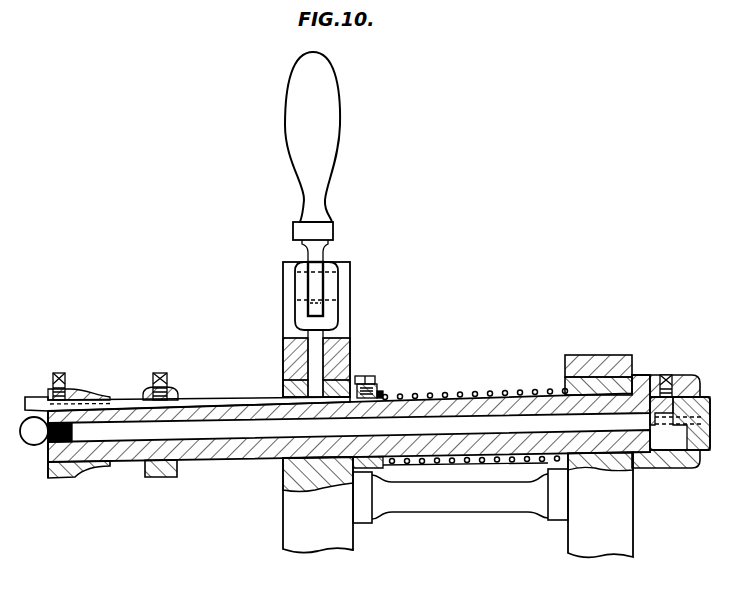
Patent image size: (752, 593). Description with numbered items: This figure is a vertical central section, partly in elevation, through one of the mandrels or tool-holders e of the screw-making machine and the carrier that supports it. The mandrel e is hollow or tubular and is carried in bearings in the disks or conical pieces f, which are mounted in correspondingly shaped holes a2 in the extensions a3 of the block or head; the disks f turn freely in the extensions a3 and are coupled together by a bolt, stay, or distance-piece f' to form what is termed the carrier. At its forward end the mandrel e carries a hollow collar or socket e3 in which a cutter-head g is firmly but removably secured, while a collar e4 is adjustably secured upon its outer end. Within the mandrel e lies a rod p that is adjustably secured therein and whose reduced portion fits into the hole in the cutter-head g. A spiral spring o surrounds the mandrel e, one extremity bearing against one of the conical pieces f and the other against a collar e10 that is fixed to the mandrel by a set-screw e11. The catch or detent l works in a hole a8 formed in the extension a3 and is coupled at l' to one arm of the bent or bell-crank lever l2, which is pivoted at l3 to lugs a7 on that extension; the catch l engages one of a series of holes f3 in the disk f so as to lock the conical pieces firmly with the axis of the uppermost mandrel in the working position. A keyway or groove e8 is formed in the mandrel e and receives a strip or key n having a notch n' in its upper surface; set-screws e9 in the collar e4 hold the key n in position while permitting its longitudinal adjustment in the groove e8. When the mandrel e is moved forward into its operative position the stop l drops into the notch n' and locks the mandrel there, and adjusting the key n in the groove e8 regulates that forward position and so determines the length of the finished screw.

The bent or bell-crank lever l2 is at (334, 240).
The lugs a7 is at (284, 270).
The coupling of catch to lever l' is at (298, 301).
The catch or detent l is at (315, 329).
The pivot l3 is at (292, 293).
The hole a8 is at (350, 341).
The extensions a3 is at (447, 359).
The series of holes f3 is at (283, 390).
The correspondingly-shaped holes a2 is at (350, 381).
The set-screw e11 is at (380, 382).
The mandrel or tool-holder e is at (349, 418).
The rod p is at (194, 431).
The spiral spring o is at (446, 393).
The strip or key n is at (351, 411).
The notch n' is at (143, 389).
The keyway or groove e8 is at (228, 409).
The set-screws e9 is at (63, 369).
The collar e4 is at (82, 478).
The disks or conical pieces f is at (458, 504).
The bolt, stay, or distance-piece f' is at (460, 496).
The collar e10 is at (392, 466).
The hollow collar or socket e3 is at (655, 464).
The cutter-head g is at (680, 423).